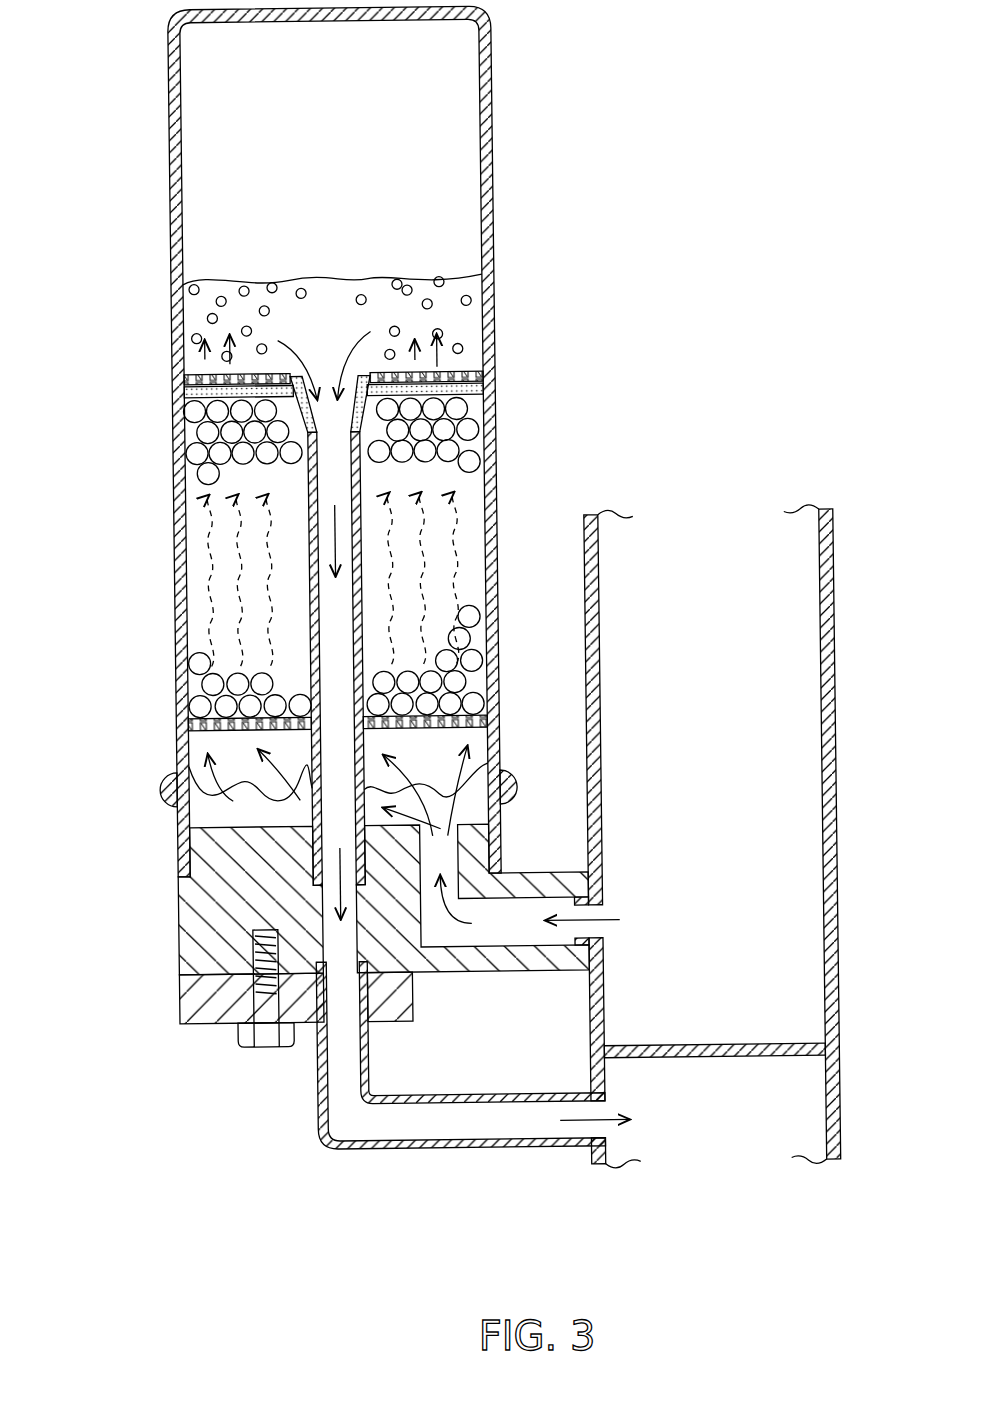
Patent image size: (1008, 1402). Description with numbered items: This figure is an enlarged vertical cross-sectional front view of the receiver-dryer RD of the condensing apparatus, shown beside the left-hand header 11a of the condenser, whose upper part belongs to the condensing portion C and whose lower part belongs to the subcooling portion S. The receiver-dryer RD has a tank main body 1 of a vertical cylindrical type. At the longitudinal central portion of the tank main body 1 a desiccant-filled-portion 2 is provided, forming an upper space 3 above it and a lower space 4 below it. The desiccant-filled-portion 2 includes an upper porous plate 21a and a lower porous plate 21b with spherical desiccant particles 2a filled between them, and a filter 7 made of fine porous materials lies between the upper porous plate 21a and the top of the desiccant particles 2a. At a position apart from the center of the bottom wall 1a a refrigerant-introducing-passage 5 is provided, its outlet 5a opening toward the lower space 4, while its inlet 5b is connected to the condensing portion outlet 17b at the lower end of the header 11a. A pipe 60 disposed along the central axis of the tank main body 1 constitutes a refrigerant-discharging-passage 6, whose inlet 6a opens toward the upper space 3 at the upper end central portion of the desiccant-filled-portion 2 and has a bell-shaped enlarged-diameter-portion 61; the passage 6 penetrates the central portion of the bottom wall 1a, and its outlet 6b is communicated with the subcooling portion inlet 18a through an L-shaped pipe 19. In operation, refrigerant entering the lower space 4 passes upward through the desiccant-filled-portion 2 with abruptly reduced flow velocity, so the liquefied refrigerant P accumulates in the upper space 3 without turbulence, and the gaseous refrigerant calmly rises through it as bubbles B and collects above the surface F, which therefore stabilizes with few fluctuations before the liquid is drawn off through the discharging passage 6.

The tank main body 1 is at (169, 136).
The bottom wall 1a is at (181, 918).
The desiccant-filled-portion 2 is at (221, 547).
The spherical desiccant particles 2a is at (200, 430).
The upper space 3 is at (316, 118).
The lower space 4 is at (226, 751).
The refrigerant-introducing-passage 5 is at (433, 859).
The outlet 5a is at (450, 824).
The inlet 5b is at (559, 908).
The refrigerant-discharging-passage 6 is at (328, 635).
The inlet 6a is at (324, 373).
The outlet 6b is at (331, 953).
The filter 7 is at (481, 394).
The left-hand header 11a is at (832, 743).
The condensing portion outlet 17b is at (592, 930).
The subcooling portion inlet 18a is at (575, 1143).
The L-shaped pipe 19 is at (382, 1149).
The upper porous plate 21a is at (466, 372).
The lower porous plate 21b is at (440, 734).
The pipe 60 is at (365, 592).
The enlarged-diameter-portion 61 is at (331, 373).
The bubbles B is at (210, 316).
The condensing portion C is at (699, 788).
The surface F is at (417, 278).
The liquefied refrigerant P is at (462, 330).
The receiver-dryer RD is at (530, 187).
The subcooling portion S is at (733, 1136).